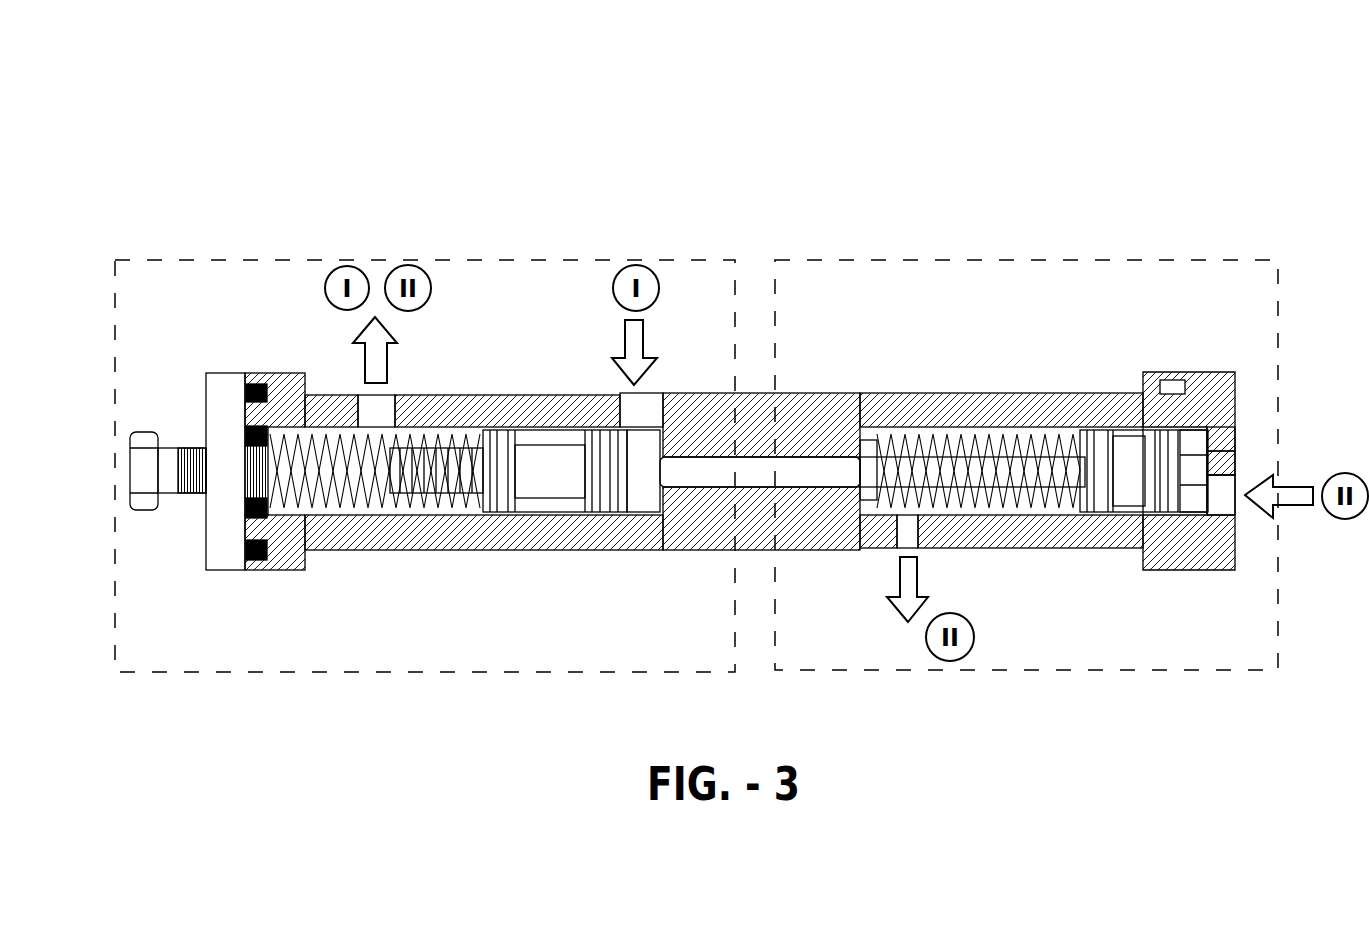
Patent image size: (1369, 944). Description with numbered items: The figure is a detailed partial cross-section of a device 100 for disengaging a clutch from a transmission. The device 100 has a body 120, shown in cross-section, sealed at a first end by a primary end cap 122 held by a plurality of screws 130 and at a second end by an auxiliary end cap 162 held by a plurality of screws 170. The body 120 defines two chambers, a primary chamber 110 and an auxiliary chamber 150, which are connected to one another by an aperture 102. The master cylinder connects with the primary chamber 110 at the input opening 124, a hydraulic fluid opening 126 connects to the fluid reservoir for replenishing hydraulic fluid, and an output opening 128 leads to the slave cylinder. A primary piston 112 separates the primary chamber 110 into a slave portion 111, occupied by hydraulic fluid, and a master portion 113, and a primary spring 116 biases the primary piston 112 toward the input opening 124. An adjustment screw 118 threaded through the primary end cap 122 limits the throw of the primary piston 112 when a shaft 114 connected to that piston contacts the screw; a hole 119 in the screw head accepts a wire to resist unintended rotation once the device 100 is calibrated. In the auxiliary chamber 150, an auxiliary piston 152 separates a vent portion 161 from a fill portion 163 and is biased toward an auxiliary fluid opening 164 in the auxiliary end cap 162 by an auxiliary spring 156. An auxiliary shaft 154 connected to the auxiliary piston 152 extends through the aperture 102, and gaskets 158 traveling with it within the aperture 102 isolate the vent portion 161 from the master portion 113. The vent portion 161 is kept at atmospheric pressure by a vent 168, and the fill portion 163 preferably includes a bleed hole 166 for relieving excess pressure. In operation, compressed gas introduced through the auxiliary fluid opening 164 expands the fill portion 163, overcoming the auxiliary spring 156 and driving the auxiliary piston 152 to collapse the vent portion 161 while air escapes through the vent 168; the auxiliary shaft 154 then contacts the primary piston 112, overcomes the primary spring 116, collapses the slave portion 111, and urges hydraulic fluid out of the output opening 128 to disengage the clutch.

The device 100 is at (640, 128).
The primary chamber 110 is at (515, 258).
The auxiliary chamber 150 is at (908, 259).
The aperture 102 is at (707, 457).
The slave portion 111 is at (427, 505).
The primary piston 112 is at (547, 485).
The master portion 113 is at (642, 500).
The shaft 114 is at (443, 455).
The primary spring 116 is at (360, 500).
The adjustment screw 118 is at (137, 482).
The hole 119 is at (145, 470).
The body 120 is at (912, 408).
The primary end cap 122 is at (207, 407).
The input opening 124 is at (628, 413).
The hydraulic fluid opening 126 is at (530, 410).
The output opening 128 is at (360, 413).
The screws 130 is at (262, 390).
The auxiliary piston 152 is at (1132, 440).
The auxiliary shaft 154 is at (808, 478).
The auxiliary spring 156 is at (988, 440).
The gaskets 158 is at (858, 470).
The vent portion 161 is at (1035, 505).
The auxiliary end cap 162 is at (1222, 462).
The fill portion 163 is at (1195, 500).
The auxiliary fluid opening 164 is at (1220, 495).
The bleed hole 166 is at (1228, 437).
The vent 168 is at (913, 535).
The screws 170 is at (1195, 400).